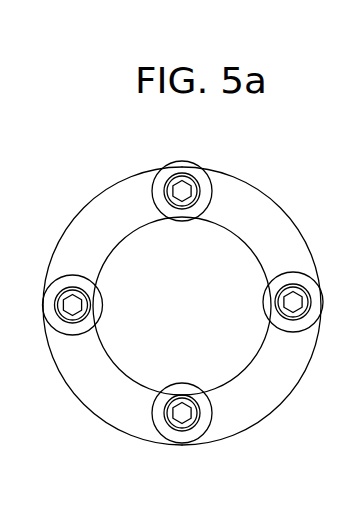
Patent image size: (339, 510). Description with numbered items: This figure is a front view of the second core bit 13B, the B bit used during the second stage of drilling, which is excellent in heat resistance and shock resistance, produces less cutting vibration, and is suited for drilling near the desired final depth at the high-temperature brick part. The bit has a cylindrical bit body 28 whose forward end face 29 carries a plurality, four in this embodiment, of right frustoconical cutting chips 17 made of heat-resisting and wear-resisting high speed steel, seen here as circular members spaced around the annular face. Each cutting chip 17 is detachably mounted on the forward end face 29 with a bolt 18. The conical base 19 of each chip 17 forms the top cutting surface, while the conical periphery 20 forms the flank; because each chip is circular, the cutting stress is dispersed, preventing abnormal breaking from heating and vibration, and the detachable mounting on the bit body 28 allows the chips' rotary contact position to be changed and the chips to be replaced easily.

The second core bit 13B is at (115, 179).
The right frustoconical cutting chip 17 is at (204, 171).
The bolt 18 is at (198, 192).
The conical base 19 is at (63, 278).
The conical periphery 20 is at (186, 162).
The cylindrical bit body 28 is at (80, 213).
The forward end face 29 is at (98, 390).